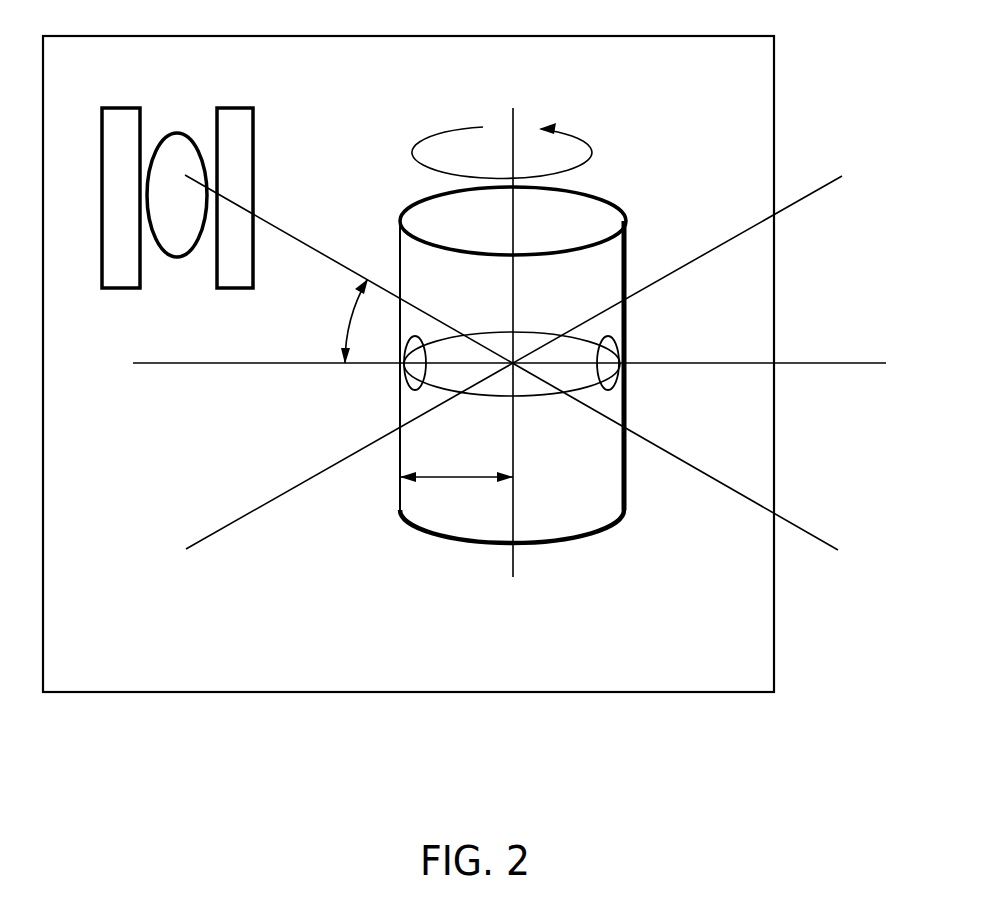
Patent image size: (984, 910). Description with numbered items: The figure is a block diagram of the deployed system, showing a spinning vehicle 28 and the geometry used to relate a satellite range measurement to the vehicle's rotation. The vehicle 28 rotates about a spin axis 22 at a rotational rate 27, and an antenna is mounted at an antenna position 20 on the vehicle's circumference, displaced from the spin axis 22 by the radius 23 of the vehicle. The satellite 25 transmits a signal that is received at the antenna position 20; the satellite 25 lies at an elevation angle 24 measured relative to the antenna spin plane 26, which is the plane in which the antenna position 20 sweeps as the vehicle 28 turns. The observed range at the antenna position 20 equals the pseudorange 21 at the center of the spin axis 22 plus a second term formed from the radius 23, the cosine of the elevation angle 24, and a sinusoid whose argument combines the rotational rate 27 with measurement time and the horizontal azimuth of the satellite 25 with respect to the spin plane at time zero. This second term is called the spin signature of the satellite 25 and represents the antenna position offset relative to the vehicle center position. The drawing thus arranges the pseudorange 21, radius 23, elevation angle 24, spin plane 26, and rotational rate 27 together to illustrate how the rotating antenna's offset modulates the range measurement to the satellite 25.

The antenna position 20 is at (408, 340).
The pseudorange 21 is at (306, 246).
The spin axis 22 is at (513, 118).
The radius 23 is at (451, 476).
The elevation angle 24 is at (352, 311).
The satellite 25 is at (254, 131).
The antenna spin plane 26 is at (590, 340).
The rotational rate 27 is at (550, 128).
The vehicle 28 is at (627, 468).